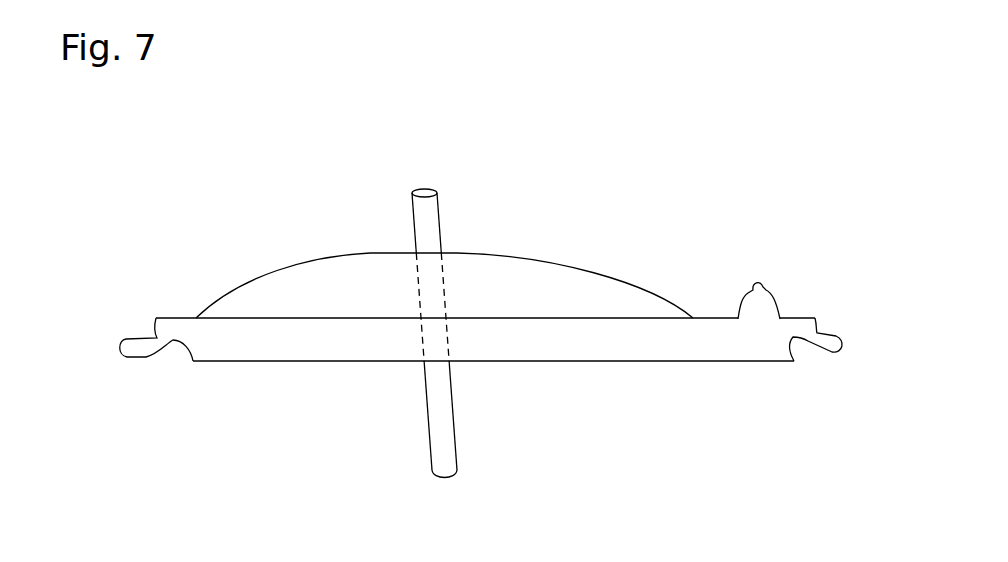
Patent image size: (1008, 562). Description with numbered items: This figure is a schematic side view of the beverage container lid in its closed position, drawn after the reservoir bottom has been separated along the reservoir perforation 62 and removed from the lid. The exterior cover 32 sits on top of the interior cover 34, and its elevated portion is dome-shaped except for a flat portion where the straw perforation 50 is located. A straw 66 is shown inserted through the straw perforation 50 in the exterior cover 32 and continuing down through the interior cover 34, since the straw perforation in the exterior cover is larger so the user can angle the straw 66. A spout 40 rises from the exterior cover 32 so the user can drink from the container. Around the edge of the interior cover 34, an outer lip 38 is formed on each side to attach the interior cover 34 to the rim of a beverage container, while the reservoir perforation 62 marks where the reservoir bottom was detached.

The exterior cover 32 is at (540, 292).
The interior cover 34 is at (605, 346).
The outer lip 38 is at (170, 340).
The spout 40 is at (763, 305).
The straw perforation 50 is at (448, 252).
The reservoir perforation 62 is at (345, 361).
The straw 66 is at (447, 449).